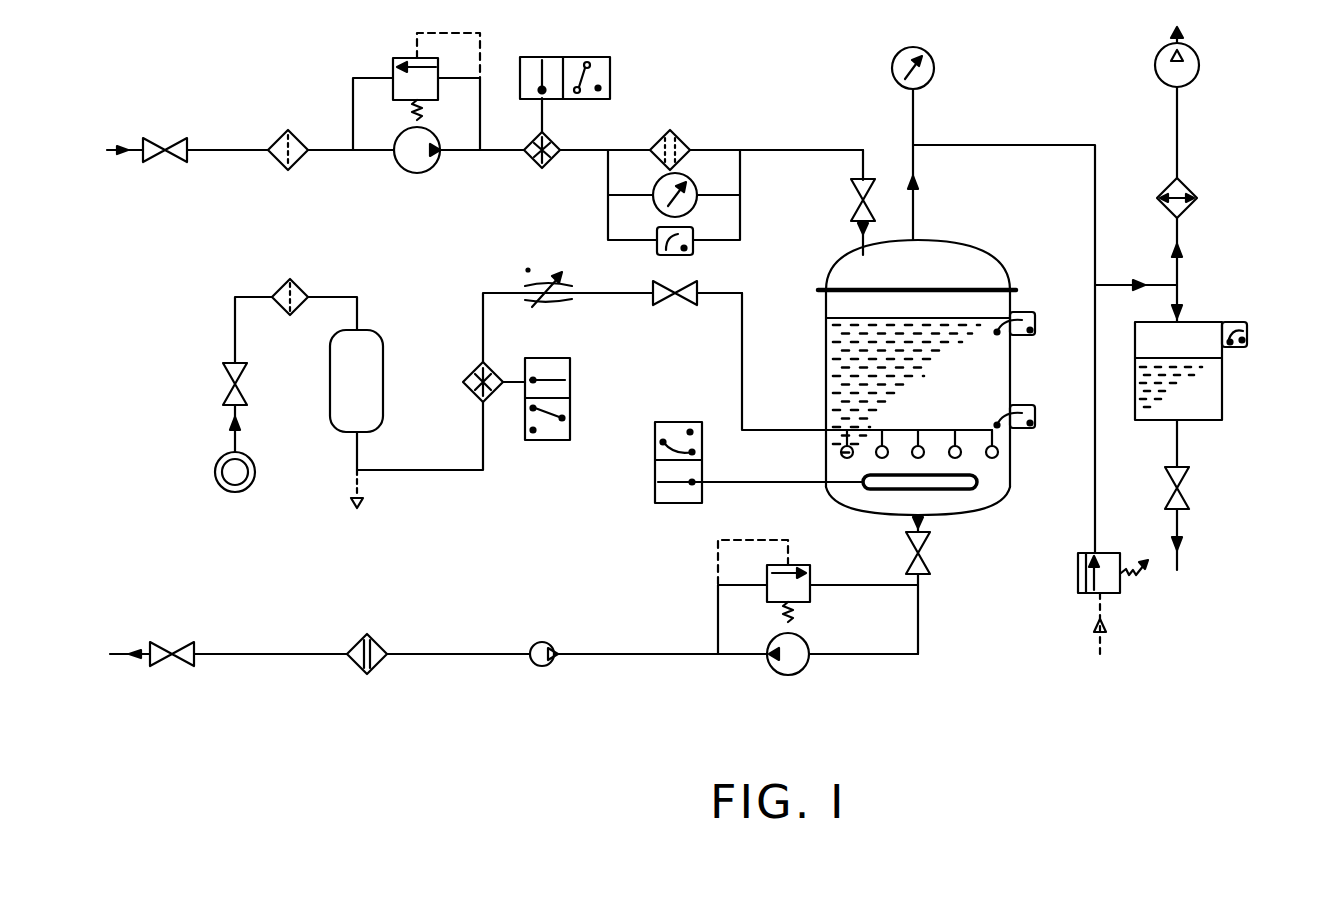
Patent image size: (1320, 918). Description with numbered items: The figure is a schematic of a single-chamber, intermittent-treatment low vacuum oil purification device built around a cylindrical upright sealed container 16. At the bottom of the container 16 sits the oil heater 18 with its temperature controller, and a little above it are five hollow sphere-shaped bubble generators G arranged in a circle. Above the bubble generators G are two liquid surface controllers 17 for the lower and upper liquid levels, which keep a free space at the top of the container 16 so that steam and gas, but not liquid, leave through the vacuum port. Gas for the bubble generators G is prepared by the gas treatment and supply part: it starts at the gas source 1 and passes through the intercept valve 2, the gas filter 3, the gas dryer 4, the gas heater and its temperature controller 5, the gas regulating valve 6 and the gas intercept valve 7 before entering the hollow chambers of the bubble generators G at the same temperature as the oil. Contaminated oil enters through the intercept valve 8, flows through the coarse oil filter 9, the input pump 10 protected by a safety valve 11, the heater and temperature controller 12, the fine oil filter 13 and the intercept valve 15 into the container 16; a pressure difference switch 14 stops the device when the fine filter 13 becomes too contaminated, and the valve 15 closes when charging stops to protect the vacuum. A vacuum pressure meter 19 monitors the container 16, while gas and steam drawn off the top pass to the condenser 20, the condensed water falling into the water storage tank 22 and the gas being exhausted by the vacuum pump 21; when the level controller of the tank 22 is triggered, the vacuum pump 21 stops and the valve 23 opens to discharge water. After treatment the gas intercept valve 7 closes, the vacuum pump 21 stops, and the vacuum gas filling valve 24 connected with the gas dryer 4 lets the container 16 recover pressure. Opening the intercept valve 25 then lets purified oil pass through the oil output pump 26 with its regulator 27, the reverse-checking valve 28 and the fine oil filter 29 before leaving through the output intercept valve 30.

The gas source 1 is at (228, 448).
The intercept valve 2 is at (234, 351).
The gas filter 3 is at (314, 310).
The gas dryer 4 is at (398, 419).
The gas heater and its temperature controller 5 is at (506, 366).
The gas regulating valve 6 is at (589, 298).
The gas intercept valve 7 is at (697, 302).
The intercept valve 8 is at (165, 164).
The coarse oil filter 9 is at (291, 159).
The input pump 10 is at (425, 158).
The safety valve 11 is at (416, 91).
The heater and its temperature controller 12 is at (565, 121).
The fine oil filter 13 is at (682, 153).
The pressure difference switch 14 is at (674, 202).
The intercept valve 15 is at (851, 202).
The cylindrical upright sealed container 16 is at (967, 248).
The liquid surface controller 17 is at (1032, 358).
The oil heater 18 is at (664, 462).
The vacuum pressure meter 19 is at (924, 143).
The condenser 20 is at (1198, 250).
The vacuum pump 21 is at (1189, 102).
The water storage tank 22 is at (1222, 398).
The valve 23 is at (1195, 495).
The vacuum gas filling valve 24 is at (1118, 605).
The intercept valve 25 is at (934, 584).
The oil output pump 26 is at (807, 650).
The pressure regulator 27 is at (818, 597).
The reverse-checking valve 28 is at (557, 645).
The fine oil filter 29 is at (380, 649).
The output intercept valve 30 is at (189, 646).
The hollow sphere-shaped bubble generators G is at (1000, 457).